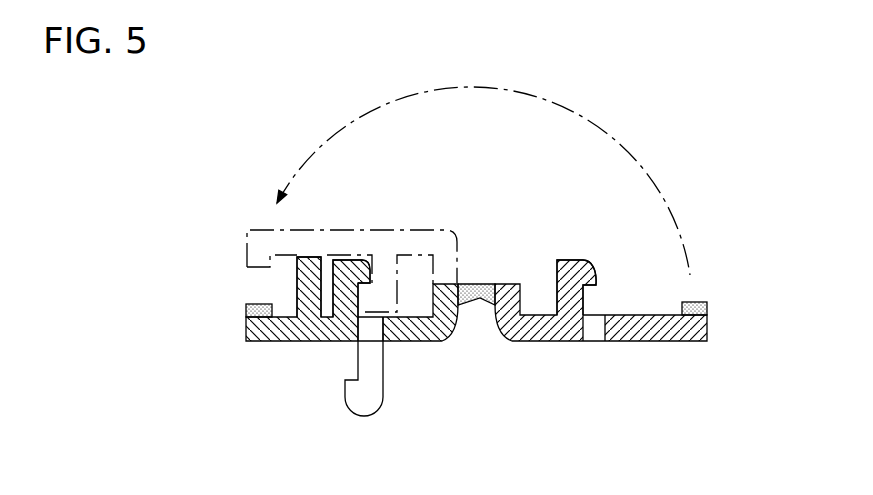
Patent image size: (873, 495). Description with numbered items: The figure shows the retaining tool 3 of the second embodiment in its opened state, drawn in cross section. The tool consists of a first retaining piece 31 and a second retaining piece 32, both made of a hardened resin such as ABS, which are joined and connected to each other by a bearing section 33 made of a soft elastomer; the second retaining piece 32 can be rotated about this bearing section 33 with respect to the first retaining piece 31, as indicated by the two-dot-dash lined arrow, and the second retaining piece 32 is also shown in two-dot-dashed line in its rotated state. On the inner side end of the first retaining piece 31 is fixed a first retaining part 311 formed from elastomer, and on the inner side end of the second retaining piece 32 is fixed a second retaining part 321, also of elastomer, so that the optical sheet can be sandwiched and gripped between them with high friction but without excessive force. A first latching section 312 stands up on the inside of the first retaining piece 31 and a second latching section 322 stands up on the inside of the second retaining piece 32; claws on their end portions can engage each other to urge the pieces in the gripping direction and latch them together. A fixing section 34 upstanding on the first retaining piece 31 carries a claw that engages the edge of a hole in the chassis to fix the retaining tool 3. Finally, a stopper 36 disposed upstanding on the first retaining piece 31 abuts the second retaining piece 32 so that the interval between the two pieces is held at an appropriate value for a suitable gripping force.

The retaining tool 3 is at (298, 118).
The first retaining piece 31 is at (283, 333).
The first retaining part 311 is at (247, 312).
The first latching section 312 is at (355, 262).
The second retaining piece 32 is at (653, 338).
The second retaining part 321 is at (707, 305).
The second latching section 322 is at (578, 262).
The bearing section 33 is at (482, 303).
The fixing section 34 is at (360, 397).
The stopper 36 is at (297, 290).